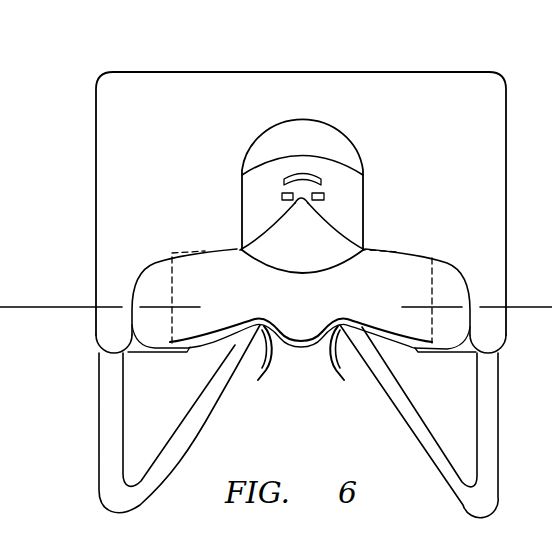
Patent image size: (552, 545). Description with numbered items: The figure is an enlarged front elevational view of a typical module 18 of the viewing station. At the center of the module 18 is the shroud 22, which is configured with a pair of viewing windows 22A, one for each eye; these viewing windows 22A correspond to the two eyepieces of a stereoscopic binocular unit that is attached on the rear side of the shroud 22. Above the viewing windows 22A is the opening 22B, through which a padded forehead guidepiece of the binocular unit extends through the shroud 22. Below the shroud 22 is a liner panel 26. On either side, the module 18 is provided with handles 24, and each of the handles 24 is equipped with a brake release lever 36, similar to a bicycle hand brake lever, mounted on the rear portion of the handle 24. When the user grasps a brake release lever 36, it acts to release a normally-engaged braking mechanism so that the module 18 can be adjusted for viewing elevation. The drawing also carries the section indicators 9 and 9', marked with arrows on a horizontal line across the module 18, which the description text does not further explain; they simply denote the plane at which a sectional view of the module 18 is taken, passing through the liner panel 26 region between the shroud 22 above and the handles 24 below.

The module 18 is at (116, 52).
The shroud 22 is at (253, 186).
The viewing windows 22A is at (293, 190).
The opening 22B is at (303, 172).
The handles 24 is at (200, 427).
The liner panel 26 is at (229, 293).
The brake release lever 36 is at (327, 374).
The section line 9 is at (100, 353).
The section line 9' is at (477, 351).